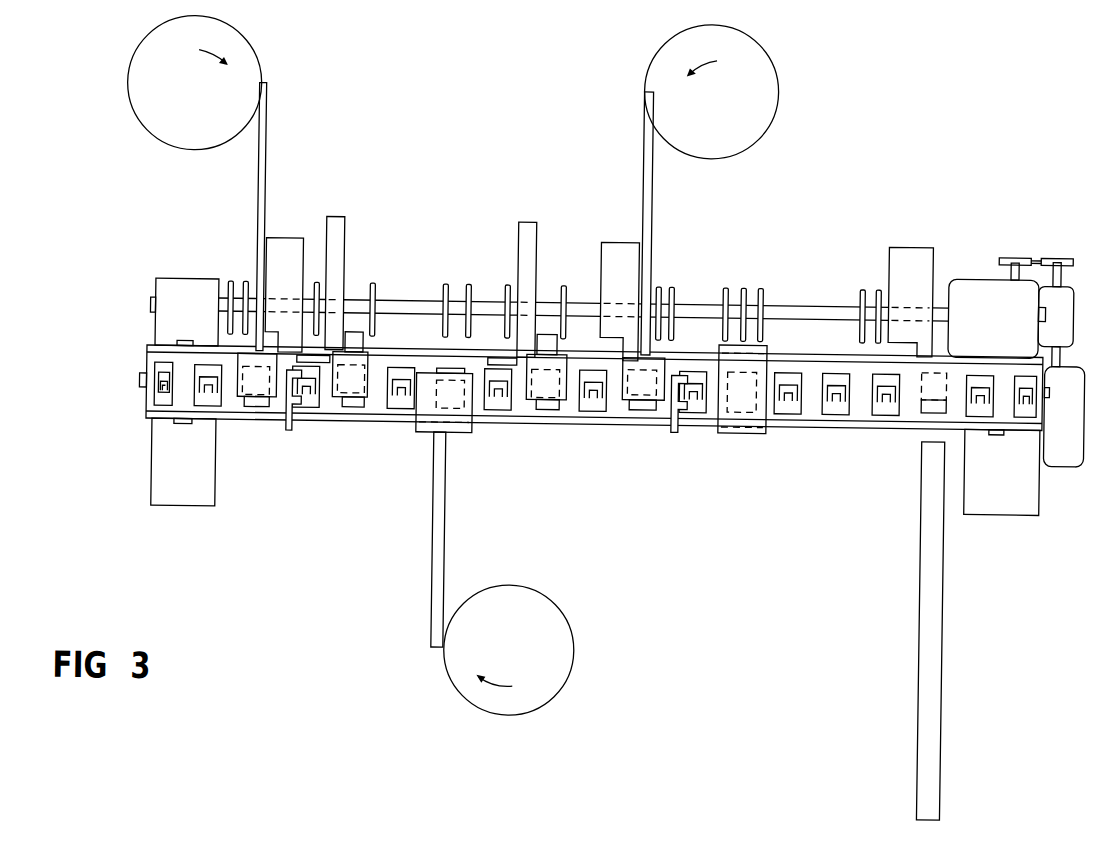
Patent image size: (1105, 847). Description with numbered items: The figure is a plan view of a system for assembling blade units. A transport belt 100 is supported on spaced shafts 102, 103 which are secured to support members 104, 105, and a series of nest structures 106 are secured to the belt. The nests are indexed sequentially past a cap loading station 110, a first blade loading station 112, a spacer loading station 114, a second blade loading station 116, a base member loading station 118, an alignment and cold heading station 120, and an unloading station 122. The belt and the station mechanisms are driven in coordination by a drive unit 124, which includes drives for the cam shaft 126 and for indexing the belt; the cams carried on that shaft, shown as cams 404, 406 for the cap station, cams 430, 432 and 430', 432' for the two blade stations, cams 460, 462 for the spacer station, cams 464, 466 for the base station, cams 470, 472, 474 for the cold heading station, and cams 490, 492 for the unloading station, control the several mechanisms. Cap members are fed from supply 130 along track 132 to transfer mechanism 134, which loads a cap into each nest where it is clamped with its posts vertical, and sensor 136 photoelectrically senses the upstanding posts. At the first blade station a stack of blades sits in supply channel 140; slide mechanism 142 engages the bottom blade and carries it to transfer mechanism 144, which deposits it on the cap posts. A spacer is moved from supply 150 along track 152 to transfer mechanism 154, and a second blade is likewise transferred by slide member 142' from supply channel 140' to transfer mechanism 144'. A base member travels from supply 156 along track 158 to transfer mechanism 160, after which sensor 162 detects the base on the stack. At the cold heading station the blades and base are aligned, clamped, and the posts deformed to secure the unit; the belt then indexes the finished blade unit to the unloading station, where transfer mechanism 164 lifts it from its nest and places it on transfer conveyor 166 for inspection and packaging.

The transport belt 100 is at (150, 357).
The shaft 102 is at (177, 423).
The shaft 103 is at (1000, 423).
The support member 104 is at (163, 505).
The support member 105 is at (1015, 503).
The nest structure 106 is at (158, 397).
The cap loading station 110 is at (260, 404).
The first blade loading station 112 is at (343, 404).
The spacer loading station 114 is at (462, 435).
The second blade loading station 116 is at (542, 406).
The base member loading station 118 is at (645, 405).
The alignment and cold heading station 120 is at (740, 427).
The unloading station 122 is at (916, 405).
The drive unit 124 is at (962, 268).
The cam shaft 126 is at (793, 301).
The supply 130 is at (142, 125).
The track 132 is at (263, 160).
The transfer mechanism 134 is at (283, 236).
The sensor 136 is at (292, 428).
The supply channel 140 is at (357, 273).
The supply channel 140' is at (497, 278).
The slide mechanism 142 is at (299, 338).
The slide member 142' is at (496, 343).
The transfer mechanism 144 is at (356, 415).
The transfer mechanism 144' is at (559, 416).
The supply 150 is at (563, 603).
The track 152 is at (434, 581).
The transfer mechanism 154 is at (472, 428).
The supply 156 is at (741, 144).
The track 158 is at (641, 154).
The transfer mechanism 160 is at (600, 237).
The sensor 162 is at (676, 426).
The transfer mechanism 164 is at (922, 392).
The transfer conveyor 166 is at (923, 602).
The cam 404 is at (232, 279).
The pickup cam 406 is at (245, 279).
The cam 430 is at (304, 275).
The cam 432 is at (372, 276).
The cam 430' is at (488, 278).
The cam 432' is at (557, 278).
The cam 460 is at (445, 279).
The cam 462 is at (468, 279).
The cam 464 is at (658, 280).
The cam 466 is at (671, 280).
The cam 470 is at (725, 279).
The cam 472 is at (743, 279).
The cam 474 is at (762, 279).
The lift cam 490 is at (862, 279).
The cam 492 is at (878, 279).